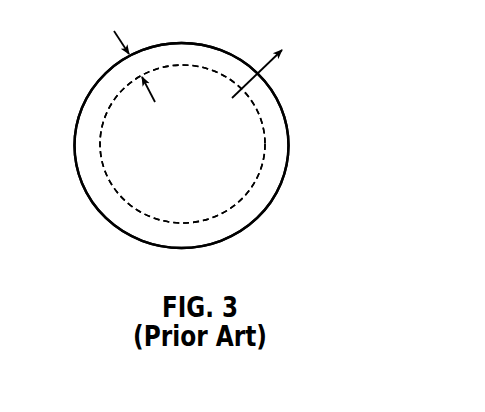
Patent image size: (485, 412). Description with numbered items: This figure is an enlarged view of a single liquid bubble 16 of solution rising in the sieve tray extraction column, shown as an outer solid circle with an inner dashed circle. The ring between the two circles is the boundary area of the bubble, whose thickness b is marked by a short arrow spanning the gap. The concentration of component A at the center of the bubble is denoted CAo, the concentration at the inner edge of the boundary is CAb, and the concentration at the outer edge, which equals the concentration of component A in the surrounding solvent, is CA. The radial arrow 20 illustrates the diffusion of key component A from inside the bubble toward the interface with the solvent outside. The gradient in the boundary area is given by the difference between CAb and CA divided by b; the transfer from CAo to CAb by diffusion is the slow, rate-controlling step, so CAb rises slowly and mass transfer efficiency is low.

The liquid bubble 16 is at (181, 43).
The arrow 20 is at (268, 63).
The thickness of the boundary b is at (119, 38).
The concentration of component A at the outer edge of the boundary CA is at (253, 221).
The concentration of component A at the inner edge of the boundary CAb is at (265, 147).
The concentration of A at the center of the bubble CAo is at (182, 144).